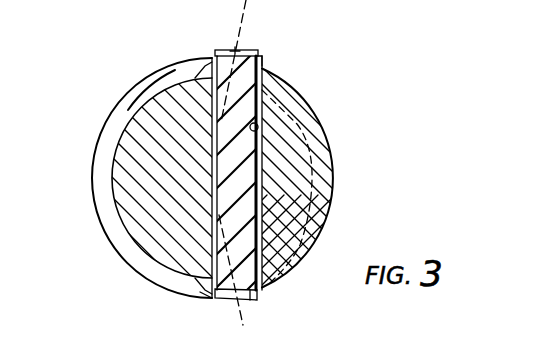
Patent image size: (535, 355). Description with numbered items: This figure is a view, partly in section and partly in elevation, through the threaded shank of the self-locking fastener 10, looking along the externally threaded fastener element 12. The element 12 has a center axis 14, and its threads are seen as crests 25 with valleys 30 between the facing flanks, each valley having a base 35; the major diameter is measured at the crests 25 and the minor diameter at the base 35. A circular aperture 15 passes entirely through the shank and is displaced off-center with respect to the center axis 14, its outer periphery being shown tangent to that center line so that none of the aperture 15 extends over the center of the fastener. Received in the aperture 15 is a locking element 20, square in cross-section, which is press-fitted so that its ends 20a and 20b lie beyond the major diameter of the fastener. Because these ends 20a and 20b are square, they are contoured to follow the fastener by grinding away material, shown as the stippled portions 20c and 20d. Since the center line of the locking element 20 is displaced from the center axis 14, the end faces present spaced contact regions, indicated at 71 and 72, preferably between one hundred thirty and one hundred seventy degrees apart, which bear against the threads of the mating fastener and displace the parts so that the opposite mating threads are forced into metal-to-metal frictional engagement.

The self-locking fastener 10 is at (381, 99).
The externally threaded fastener element 12 is at (318, 183).
The center axis 14 is at (210, 178).
The aperture 15 is at (262, 128).
The locking element 20 is at (262, 222).
The end of locking element 20a is at (250, 50).
The end of locking element 20b is at (238, 296).
The stippled portion 20c is at (259, 56).
The stippled portion 20d is at (245, 299).
The crest 25 is at (303, 253).
The valley 30 is at (112, 130).
The base 35 is at (140, 106).
The contact region spacing indication 71 is at (240, 28).
The contact region spacing indication 72 is at (207, 298).